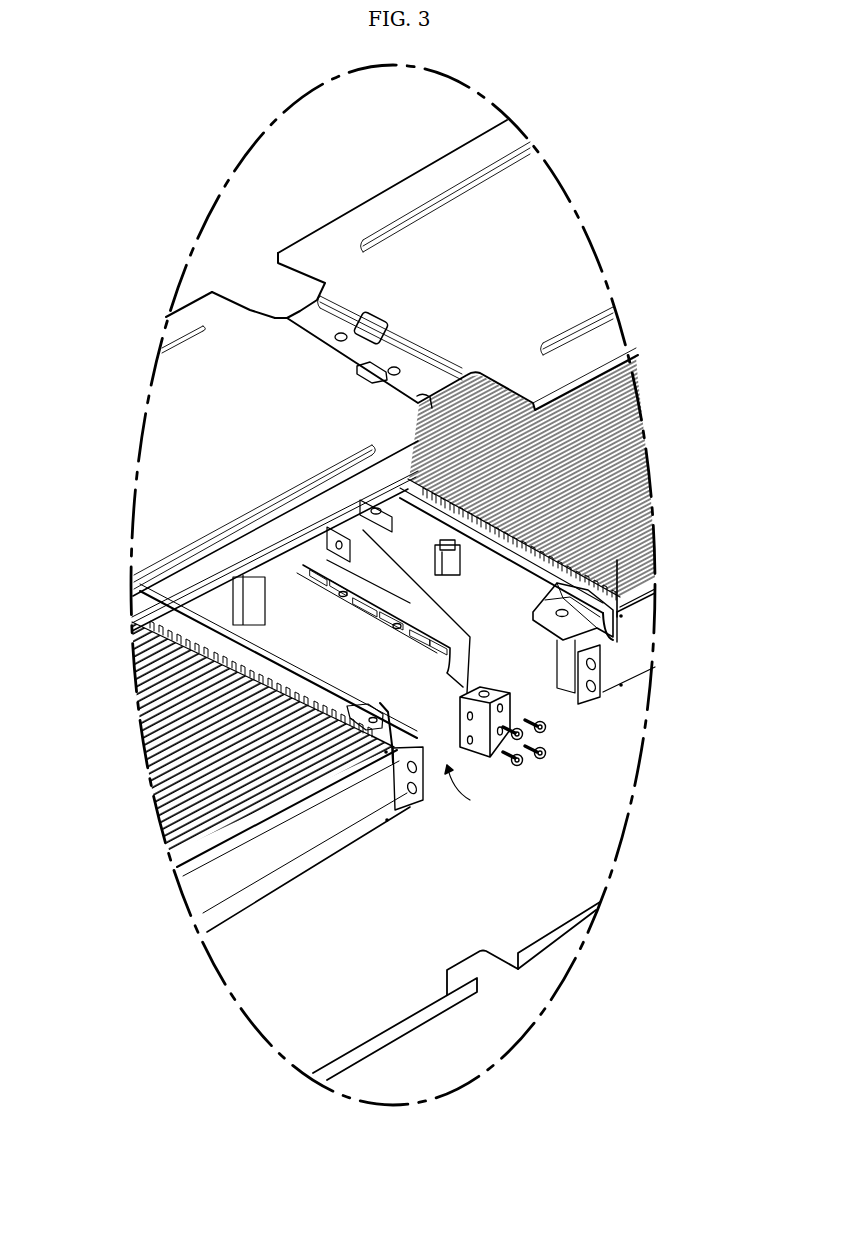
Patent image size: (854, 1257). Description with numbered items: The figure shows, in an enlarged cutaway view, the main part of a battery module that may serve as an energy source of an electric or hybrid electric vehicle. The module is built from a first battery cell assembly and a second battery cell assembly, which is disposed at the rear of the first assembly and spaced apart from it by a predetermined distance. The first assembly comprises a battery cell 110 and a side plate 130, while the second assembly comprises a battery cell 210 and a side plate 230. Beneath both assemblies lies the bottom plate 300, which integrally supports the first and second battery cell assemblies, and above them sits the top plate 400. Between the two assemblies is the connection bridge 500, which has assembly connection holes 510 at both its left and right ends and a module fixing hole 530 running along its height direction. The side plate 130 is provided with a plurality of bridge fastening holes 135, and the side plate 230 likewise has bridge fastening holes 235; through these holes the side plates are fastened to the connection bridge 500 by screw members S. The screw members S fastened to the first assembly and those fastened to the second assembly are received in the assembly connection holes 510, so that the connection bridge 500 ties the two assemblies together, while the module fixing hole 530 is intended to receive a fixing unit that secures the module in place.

The battery cell 110 is at (150, 738).
The side plate 130 is at (202, 893).
The bridge fastening holes 135 is at (413, 793).
The battery cell 210 is at (653, 484).
The side plate 230 is at (643, 633).
The bridge fastening holes 235 is at (598, 683).
The bottom plate 300 is at (257, 988).
The top plate 400 is at (163, 437).
The connection bridge 500 is at (396, 693).
The assembly connection hole 510 is at (483, 743).
The module fixing hole 530 is at (490, 693).
The screw member S is at (543, 760).